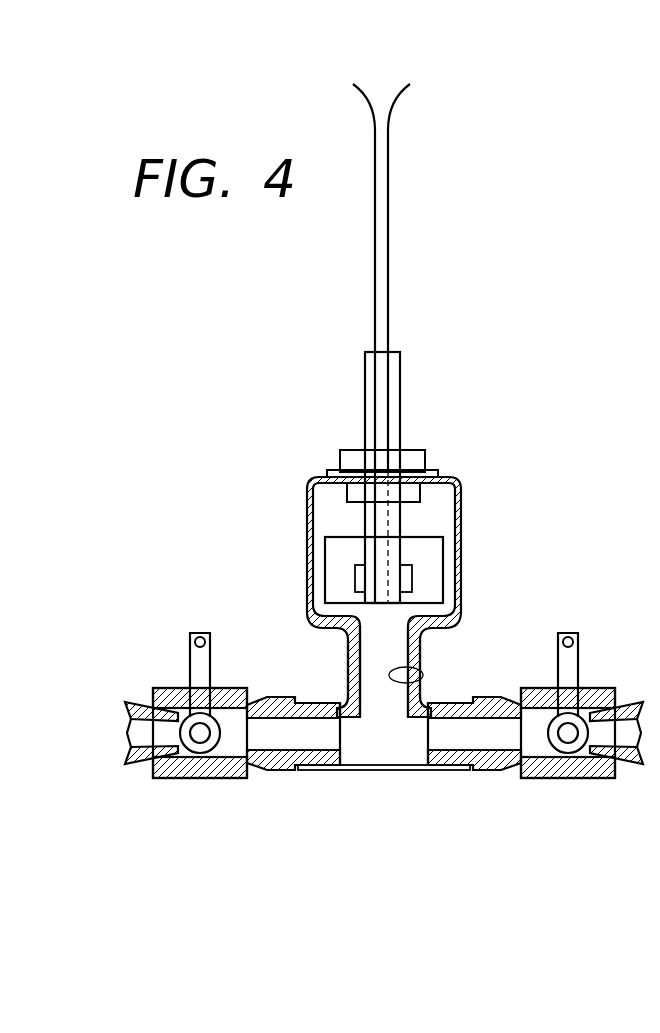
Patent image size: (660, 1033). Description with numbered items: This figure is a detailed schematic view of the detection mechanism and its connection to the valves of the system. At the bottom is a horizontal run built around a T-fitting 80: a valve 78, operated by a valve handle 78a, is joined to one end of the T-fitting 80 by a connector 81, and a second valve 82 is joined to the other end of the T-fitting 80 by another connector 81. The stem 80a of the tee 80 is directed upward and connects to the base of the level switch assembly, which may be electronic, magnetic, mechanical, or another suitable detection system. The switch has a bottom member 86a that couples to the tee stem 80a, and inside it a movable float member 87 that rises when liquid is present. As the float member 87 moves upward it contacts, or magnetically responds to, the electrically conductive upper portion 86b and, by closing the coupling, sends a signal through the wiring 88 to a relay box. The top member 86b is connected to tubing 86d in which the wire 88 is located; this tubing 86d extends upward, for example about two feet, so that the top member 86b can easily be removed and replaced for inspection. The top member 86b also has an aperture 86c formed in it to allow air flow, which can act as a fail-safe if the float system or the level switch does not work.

The valve 78 is at (200, 778).
The valve handle 78a is at (212, 648).
The T-fitting 80 is at (453, 703).
The stem of the tee 80a is at (580, 655).
The connector 81 is at (283, 770).
The second valve 82 is at (562, 778).
The bottom member 86a is at (461, 610).
The upper portion 86b is at (461, 505).
The aperture 86c is at (427, 463).
The tubing 86d is at (400, 365).
The movable float member 87 is at (423, 535).
The wiring 88 is at (388, 223).